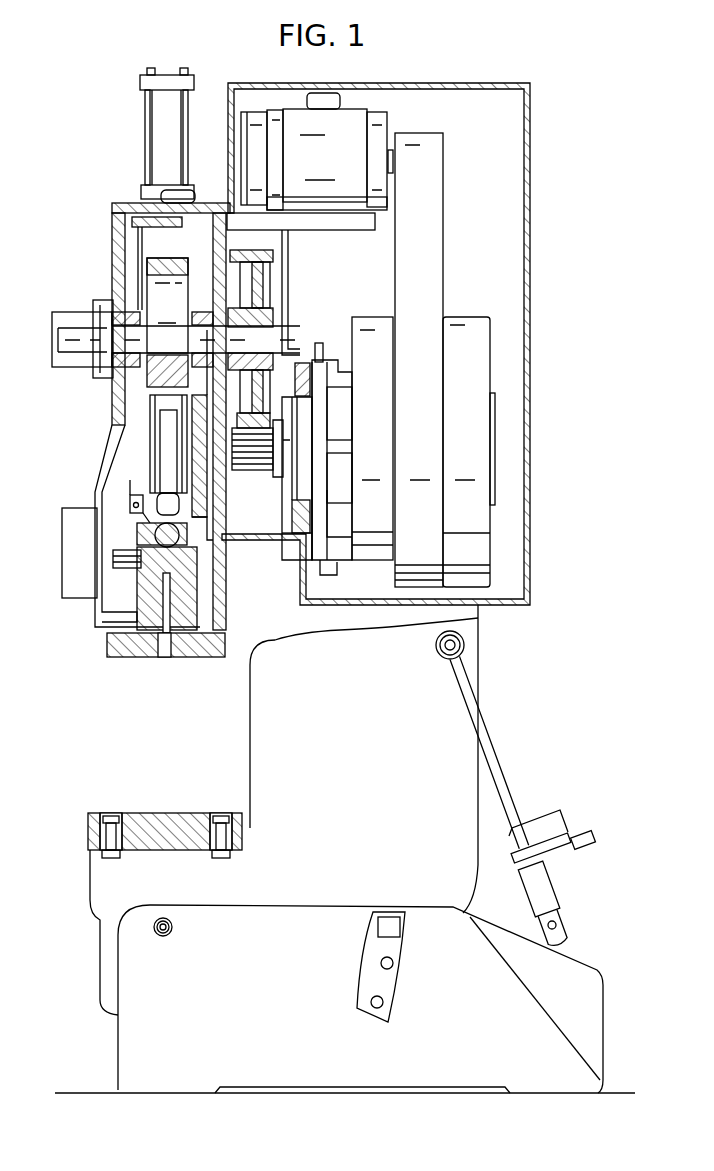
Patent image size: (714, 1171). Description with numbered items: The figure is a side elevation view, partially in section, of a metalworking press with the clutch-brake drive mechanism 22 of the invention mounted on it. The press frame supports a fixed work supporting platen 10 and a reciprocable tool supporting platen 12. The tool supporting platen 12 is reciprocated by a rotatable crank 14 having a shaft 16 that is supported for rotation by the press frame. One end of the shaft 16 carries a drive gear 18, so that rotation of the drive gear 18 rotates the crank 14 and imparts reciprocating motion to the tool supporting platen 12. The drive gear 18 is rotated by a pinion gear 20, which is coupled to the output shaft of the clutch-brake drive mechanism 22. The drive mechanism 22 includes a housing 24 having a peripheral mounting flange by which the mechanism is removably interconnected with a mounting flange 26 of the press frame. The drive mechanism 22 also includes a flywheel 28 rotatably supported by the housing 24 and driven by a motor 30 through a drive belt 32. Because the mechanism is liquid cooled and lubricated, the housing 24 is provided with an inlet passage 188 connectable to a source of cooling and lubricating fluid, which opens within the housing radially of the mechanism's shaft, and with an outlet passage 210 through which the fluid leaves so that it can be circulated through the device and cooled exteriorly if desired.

The fixed work supporting platen 10 is at (88, 823).
The reciprocable tool supporting platen 12 is at (107, 643).
The rotatable crank 14 is at (155, 293).
The shaft 16 is at (78, 352).
The drive gear 18 is at (253, 282).
The pinion gear 20 is at (247, 466).
The clutch-brake drive mechanism 22 is at (340, 338).
The housing 24 is at (337, 475).
The mounting flange 26 is at (290, 528).
The flywheel 28 is at (473, 327).
The motor 30 is at (335, 202).
The drive belt 32 is at (428, 253).
The inlet passage 188 is at (325, 351).
The outlet passage 210 is at (330, 577).